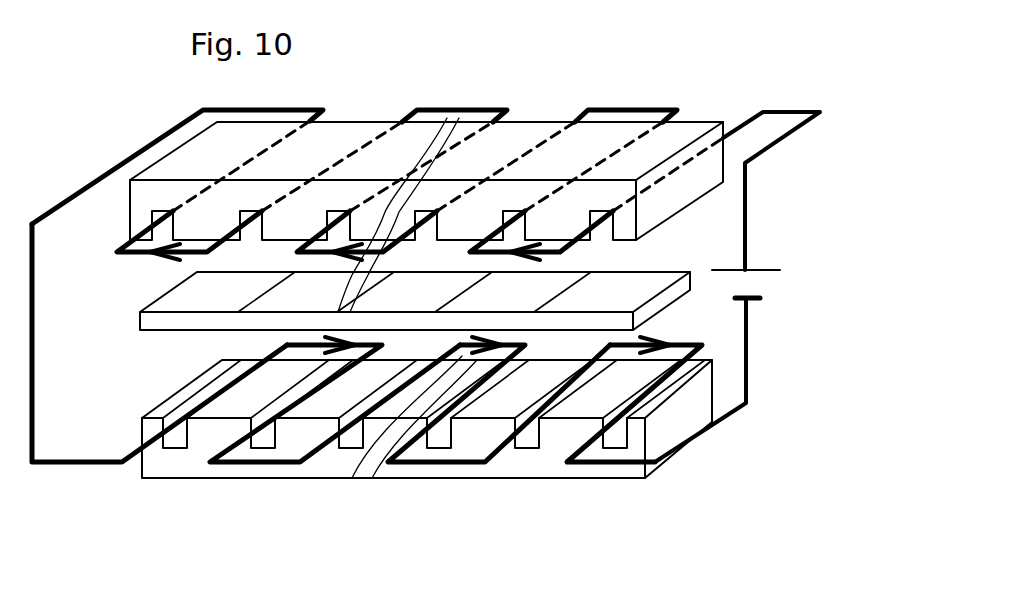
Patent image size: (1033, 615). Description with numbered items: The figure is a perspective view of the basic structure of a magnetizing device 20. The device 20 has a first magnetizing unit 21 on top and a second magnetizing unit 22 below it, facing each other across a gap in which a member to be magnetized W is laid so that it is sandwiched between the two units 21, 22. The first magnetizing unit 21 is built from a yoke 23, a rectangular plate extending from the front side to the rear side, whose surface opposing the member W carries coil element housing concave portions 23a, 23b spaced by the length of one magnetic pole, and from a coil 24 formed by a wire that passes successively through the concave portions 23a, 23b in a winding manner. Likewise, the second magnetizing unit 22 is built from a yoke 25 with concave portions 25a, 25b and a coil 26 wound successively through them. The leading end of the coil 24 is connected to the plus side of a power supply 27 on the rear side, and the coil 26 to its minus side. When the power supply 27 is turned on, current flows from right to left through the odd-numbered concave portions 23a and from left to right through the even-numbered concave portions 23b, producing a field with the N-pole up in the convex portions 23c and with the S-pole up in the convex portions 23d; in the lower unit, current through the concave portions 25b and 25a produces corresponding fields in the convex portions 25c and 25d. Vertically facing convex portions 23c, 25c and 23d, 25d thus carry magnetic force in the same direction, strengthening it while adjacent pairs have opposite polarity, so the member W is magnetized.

The magnetizing device 20 is at (650, 98).
The first magnetizing unit 21 is at (540, 122).
The second magnetizing unit 22 is at (548, 479).
The yoke 23 is at (340, 120).
The coil element housing concave portion 23a is at (497, 206).
The coil element housing concave portion 23b is at (158, 225).
The convex portion 23c is at (210, 213).
The convex portion 23d is at (545, 205).
The coil 24 is at (452, 112).
The yoke 25 is at (198, 470).
The coil element housing concave portion 25a is at (265, 432).
The coil element housing concave portion 25b is at (173, 443).
The convex portion 25c is at (210, 430).
The convex portion 25d is at (300, 432).
The coil 26 is at (352, 480).
The power supply 27 is at (768, 268).
The member to be magnetized W is at (143, 323).